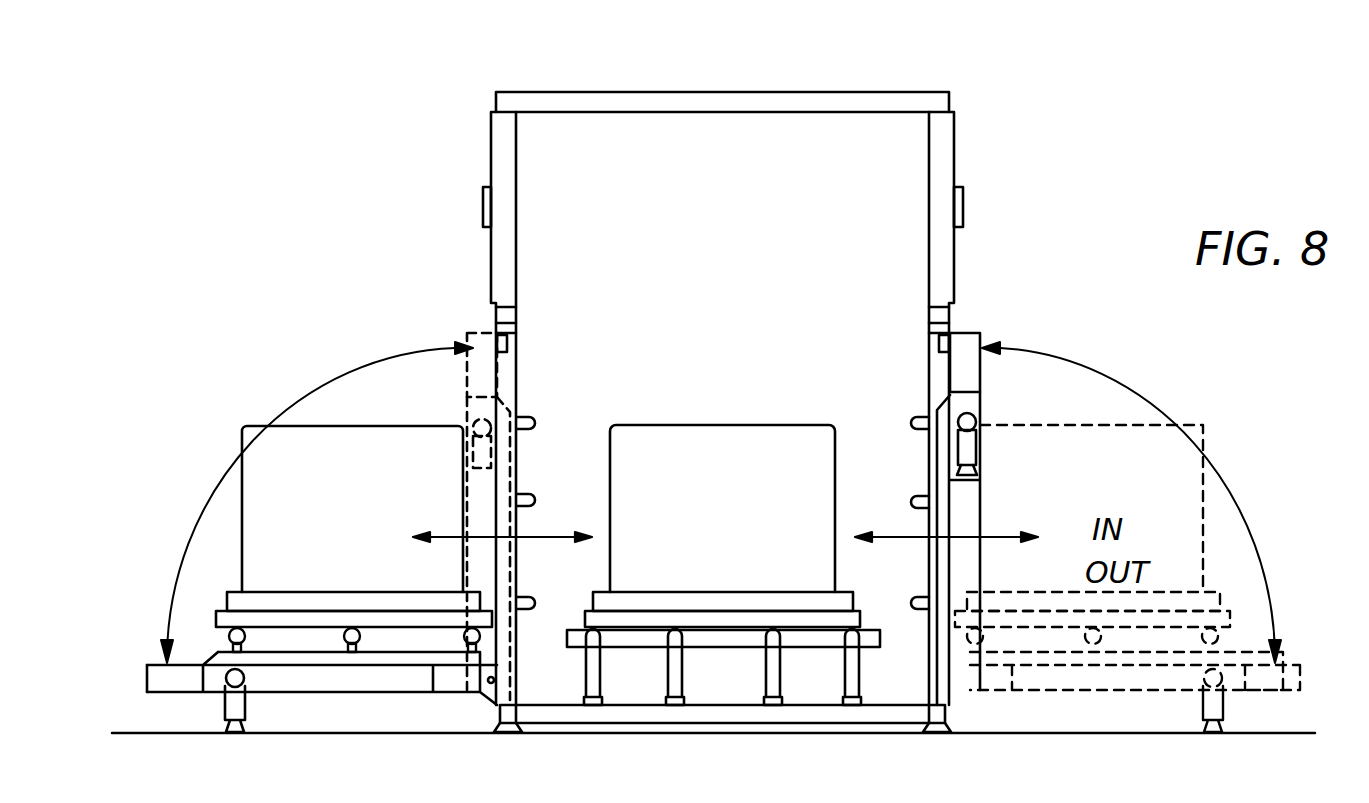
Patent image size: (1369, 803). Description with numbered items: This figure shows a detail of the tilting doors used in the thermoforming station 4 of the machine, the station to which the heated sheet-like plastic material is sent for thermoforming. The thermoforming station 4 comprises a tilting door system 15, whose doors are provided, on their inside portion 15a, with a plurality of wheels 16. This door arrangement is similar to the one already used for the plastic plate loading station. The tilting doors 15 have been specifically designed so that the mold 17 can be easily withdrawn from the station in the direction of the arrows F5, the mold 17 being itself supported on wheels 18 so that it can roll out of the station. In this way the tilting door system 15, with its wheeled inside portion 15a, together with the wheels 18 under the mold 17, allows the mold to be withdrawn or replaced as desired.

The thermoforming station 4 is at (785, 92).
The tilting door system 15 is at (158, 675).
The inside portion 15a is at (210, 658).
The wheels 16 is at (350, 628).
The mold 17 is at (242, 428).
The wheels 18 is at (683, 630).
The arrows F5 is at (727, 504).